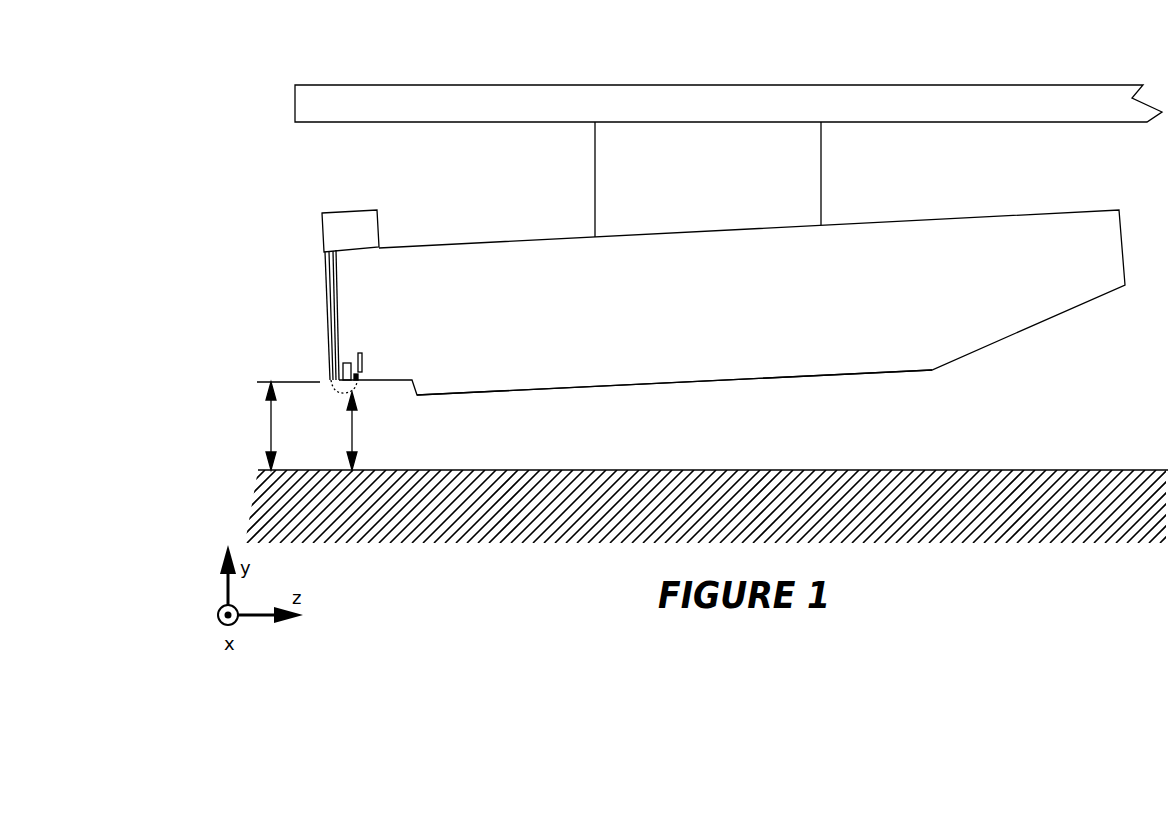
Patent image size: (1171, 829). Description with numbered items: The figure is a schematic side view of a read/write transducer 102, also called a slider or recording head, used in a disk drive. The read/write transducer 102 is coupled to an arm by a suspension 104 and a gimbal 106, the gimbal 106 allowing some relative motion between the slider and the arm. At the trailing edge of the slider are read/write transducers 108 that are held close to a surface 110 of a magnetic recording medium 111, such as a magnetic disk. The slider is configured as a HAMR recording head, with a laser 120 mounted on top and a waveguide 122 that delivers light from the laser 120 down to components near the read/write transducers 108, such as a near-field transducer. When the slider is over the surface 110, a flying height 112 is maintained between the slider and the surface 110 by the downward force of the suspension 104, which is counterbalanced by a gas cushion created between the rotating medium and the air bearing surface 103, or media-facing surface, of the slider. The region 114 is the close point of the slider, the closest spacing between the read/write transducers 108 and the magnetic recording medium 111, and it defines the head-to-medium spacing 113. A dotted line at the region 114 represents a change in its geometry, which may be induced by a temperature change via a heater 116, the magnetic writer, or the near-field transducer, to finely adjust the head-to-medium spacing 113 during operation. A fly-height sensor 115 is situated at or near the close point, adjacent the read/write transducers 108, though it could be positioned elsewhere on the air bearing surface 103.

The read/write transducer 102 is at (988, 226).
The air bearing surface 103 is at (540, 392).
The suspension 104 is at (1052, 93).
The gimbal 106 is at (821, 170).
The read/write transducers 108 is at (343, 366).
The surface 110 is at (988, 468).
The magnetic recording medium 111 is at (1008, 523).
The flying height 112 is at (267, 426).
The head-to-medium spacing 113 is at (328, 431).
The close point region 114 is at (357, 383).
The fly-height sensor 115 is at (359, 377).
The heater 116 is at (360, 353).
The laser 120 is at (348, 222).
The waveguide 122 is at (330, 286).